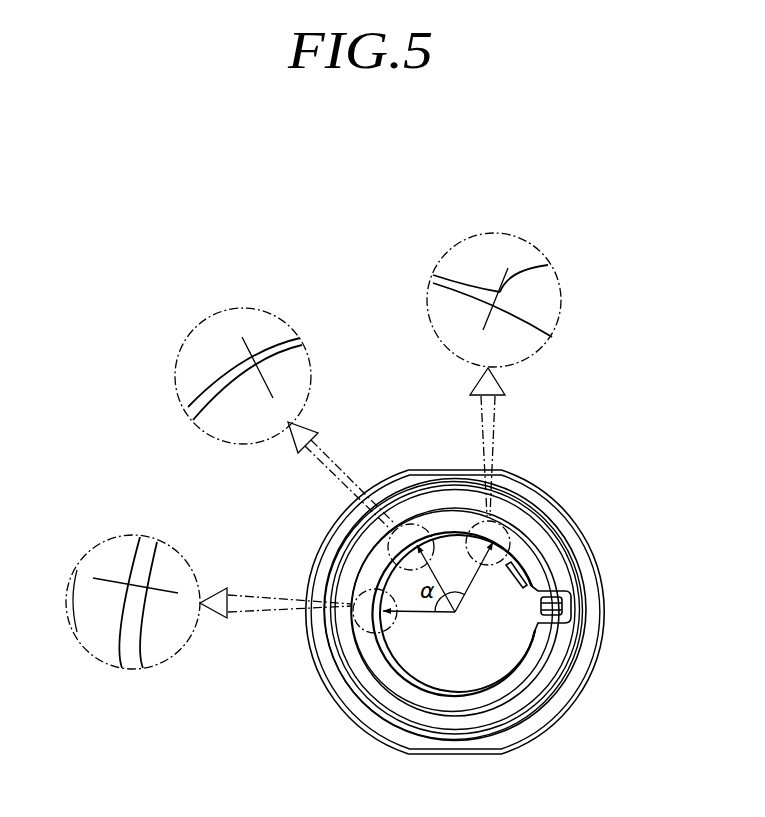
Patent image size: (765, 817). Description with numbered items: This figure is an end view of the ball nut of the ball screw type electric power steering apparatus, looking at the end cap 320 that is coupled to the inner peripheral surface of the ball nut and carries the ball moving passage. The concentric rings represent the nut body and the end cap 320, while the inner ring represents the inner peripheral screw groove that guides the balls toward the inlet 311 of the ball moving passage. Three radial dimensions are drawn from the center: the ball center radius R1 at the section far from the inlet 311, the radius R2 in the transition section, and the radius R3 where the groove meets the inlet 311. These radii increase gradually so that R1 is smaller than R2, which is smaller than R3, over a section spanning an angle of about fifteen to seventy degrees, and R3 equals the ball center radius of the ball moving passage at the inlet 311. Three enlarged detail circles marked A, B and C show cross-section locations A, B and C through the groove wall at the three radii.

The inlet of the ball moving passage 311 is at (483, 549).
The end cap 320 is at (552, 582).
The center radius of the ball R1 is at (419, 626).
The center radius of the ball R2 is at (436, 578).
The center radius of the ball R3 is at (474, 577).
The section A-A' A is at (178, 595).
The section B-B' B is at (271, 399).
The section C-C' C is at (481, 329).